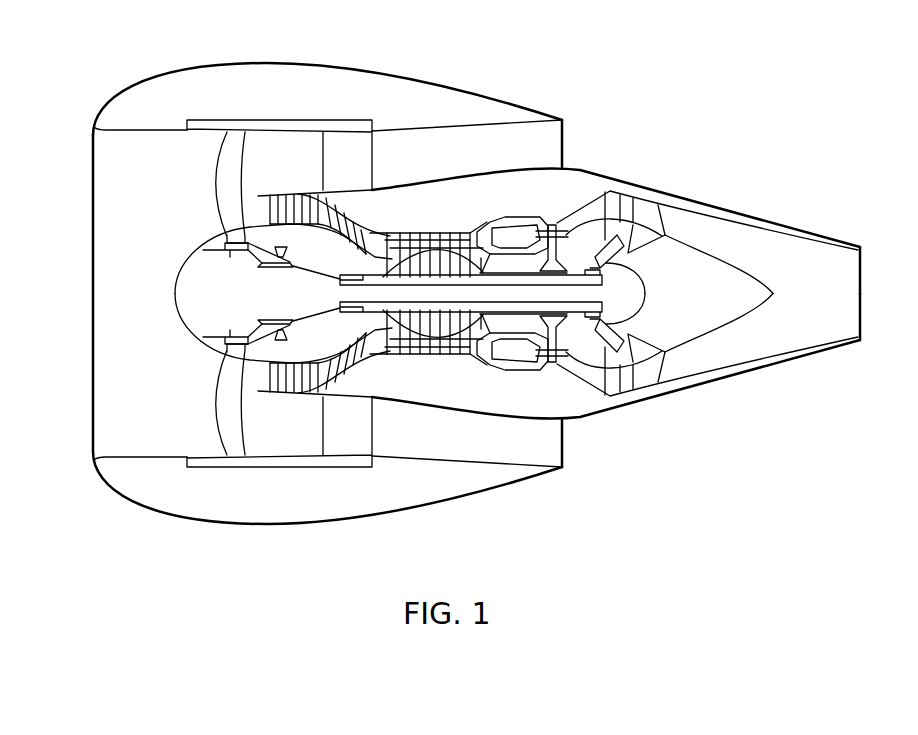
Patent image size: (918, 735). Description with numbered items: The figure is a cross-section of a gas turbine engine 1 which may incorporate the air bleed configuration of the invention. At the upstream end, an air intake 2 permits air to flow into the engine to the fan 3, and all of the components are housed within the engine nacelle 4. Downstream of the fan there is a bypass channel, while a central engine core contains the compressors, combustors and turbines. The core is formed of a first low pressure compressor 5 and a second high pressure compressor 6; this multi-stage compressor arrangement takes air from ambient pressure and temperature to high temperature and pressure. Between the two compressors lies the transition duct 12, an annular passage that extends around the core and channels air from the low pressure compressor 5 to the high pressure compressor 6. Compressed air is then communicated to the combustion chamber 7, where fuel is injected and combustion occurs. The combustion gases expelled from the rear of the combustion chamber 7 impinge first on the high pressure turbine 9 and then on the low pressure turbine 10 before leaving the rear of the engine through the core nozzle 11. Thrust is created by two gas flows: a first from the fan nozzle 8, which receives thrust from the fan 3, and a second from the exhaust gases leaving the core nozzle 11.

The gas turbine engine 1 is at (517, 72).
The air intake 2 is at (110, 355).
The fan 3 is at (228, 432).
The engine nacelle 4 is at (193, 497).
The low pressure compressor 5 is at (302, 395).
The high pressure compressor 6 is at (433, 352).
The combustion chamber 7 is at (517, 357).
The fan nozzle 8 is at (547, 455).
The high pressure turbine 9 is at (553, 363).
The low pressure turbine 10 is at (593, 385).
The core nozzle 11 is at (763, 340).
The transition duct 12 is at (363, 237).